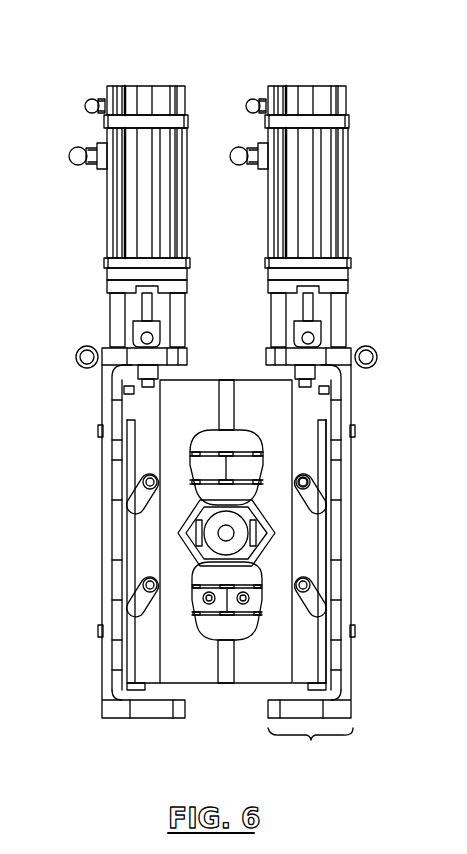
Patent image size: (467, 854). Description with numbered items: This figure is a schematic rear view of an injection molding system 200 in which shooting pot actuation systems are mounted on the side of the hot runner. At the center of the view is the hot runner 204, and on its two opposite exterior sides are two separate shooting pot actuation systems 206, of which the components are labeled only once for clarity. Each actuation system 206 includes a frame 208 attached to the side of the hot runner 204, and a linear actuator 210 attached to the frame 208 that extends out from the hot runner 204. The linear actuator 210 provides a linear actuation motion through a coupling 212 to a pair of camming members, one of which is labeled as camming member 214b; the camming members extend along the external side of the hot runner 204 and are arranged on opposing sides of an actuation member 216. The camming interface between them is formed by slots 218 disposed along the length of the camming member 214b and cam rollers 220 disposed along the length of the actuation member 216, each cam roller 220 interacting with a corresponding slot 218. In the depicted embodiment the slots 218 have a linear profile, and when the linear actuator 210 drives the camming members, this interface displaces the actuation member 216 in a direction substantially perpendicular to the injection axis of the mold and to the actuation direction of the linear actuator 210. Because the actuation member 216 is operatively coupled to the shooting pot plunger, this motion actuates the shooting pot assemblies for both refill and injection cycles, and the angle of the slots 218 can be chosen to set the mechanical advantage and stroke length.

The injection molding system 200 is at (60, 95).
The hot runner 204 is at (217, 690).
The shooting pot actuation system 206 is at (310, 749).
The frame 208 is at (368, 368).
The linear actuator 210 is at (350, 223).
The coupling 212 is at (318, 323).
The camming member 214b is at (310, 540).
The actuation member 216 is at (323, 497).
The slot 218 is at (150, 505).
The cam roller 220 is at (312, 477).